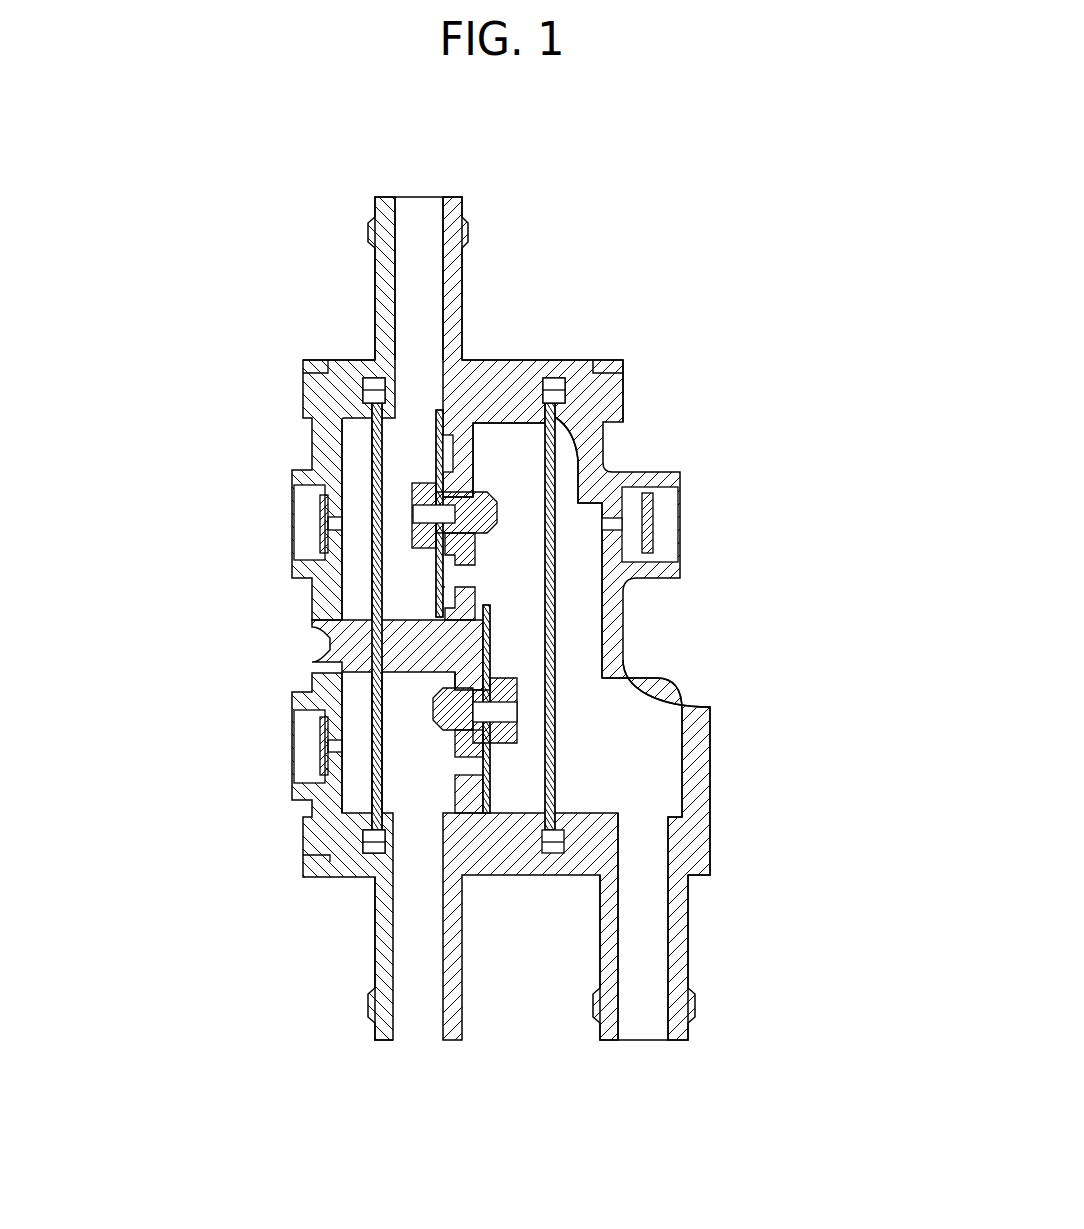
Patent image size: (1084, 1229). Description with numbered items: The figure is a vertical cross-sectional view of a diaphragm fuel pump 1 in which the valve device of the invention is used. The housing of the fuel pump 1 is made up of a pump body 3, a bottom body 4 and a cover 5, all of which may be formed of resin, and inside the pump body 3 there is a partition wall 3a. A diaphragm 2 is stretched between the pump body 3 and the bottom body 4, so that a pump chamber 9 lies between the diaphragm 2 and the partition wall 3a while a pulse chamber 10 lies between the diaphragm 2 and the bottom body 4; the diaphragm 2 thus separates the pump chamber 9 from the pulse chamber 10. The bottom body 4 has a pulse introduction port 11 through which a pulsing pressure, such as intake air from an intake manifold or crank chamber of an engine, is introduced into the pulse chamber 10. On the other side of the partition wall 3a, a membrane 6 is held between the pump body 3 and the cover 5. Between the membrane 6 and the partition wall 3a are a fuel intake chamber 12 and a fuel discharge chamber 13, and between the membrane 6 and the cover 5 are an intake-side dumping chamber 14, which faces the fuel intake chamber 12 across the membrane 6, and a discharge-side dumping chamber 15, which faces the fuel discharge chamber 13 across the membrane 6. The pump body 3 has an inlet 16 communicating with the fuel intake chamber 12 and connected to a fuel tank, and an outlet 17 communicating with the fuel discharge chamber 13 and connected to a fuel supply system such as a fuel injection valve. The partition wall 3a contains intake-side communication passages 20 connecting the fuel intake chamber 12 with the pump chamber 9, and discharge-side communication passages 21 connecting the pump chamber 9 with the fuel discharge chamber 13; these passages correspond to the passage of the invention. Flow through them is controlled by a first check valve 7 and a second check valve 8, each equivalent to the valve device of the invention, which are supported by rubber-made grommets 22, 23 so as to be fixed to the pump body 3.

The fuel pump 1 is at (613, 360).
The diaphragm 2 is at (557, 641).
The pump body 3 is at (533, 357).
The partition wall 3a is at (477, 458).
The bottom body 4 is at (712, 850).
The cover 5 is at (303, 382).
The membrane 6 is at (357, 643).
The first check valve 7 is at (483, 773).
The second check valve 8 is at (425, 578).
The pump chamber 9 is at (528, 458).
The pulse chamber 10 is at (650, 755).
The pulse introduction port 11 is at (645, 1042).
The fuel intake chamber 12 is at (400, 783).
The fuel discharge chamber 13 is at (365, 412).
The intake-side dumping chamber 14 is at (357, 697).
The discharge-side dumping chamber 15 is at (357, 448).
The inlet 16 is at (410, 1042).
The outlet 17 is at (418, 197).
The intake-side communication passages 20 is at (455, 767).
The discharge-side communication passages 21 is at (480, 577).
The grommet 22 is at (510, 692).
The grommet 23 is at (427, 485).